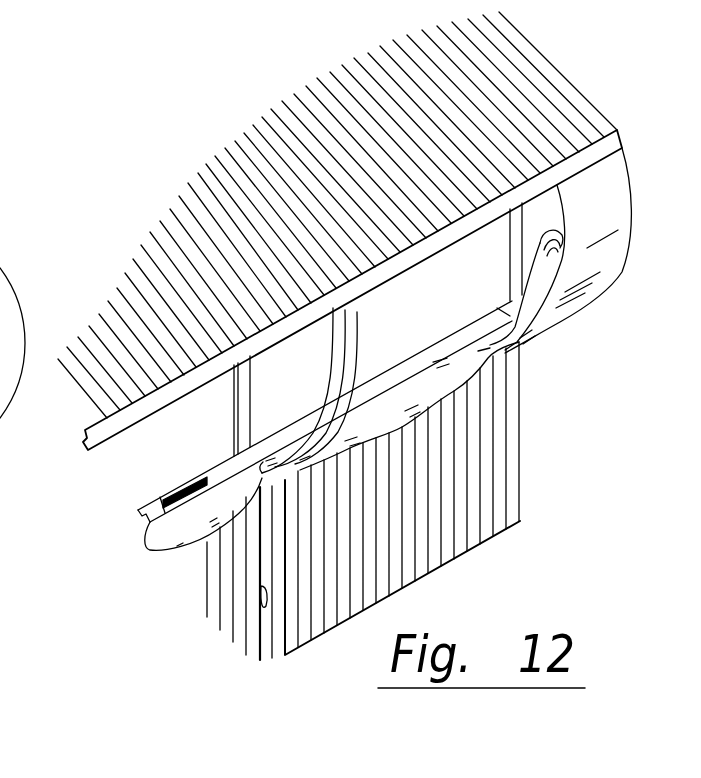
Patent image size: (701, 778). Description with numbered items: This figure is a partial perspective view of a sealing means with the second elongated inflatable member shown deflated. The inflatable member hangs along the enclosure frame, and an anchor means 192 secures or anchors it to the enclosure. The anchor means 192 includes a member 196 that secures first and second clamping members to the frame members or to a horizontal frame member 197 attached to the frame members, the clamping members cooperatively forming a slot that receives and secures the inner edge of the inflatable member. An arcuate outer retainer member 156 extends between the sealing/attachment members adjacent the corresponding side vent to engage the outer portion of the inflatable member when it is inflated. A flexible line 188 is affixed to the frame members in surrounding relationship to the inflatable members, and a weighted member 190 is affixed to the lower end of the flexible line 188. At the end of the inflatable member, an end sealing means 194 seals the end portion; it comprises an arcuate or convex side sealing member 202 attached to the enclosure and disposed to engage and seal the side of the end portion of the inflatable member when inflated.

The member 196 is at (237, 428).
The horizontal frame member 197 is at (310, 423).
The arcuate outer retainer member 156 is at (357, 333).
The anchor means 192 is at (145, 487).
The flexible line 188 is at (260, 563).
The weighted member 190 is at (260, 615).
The end sealing means 194 is at (598, 342).
The arcuate side sealing member 202 is at (600, 262).